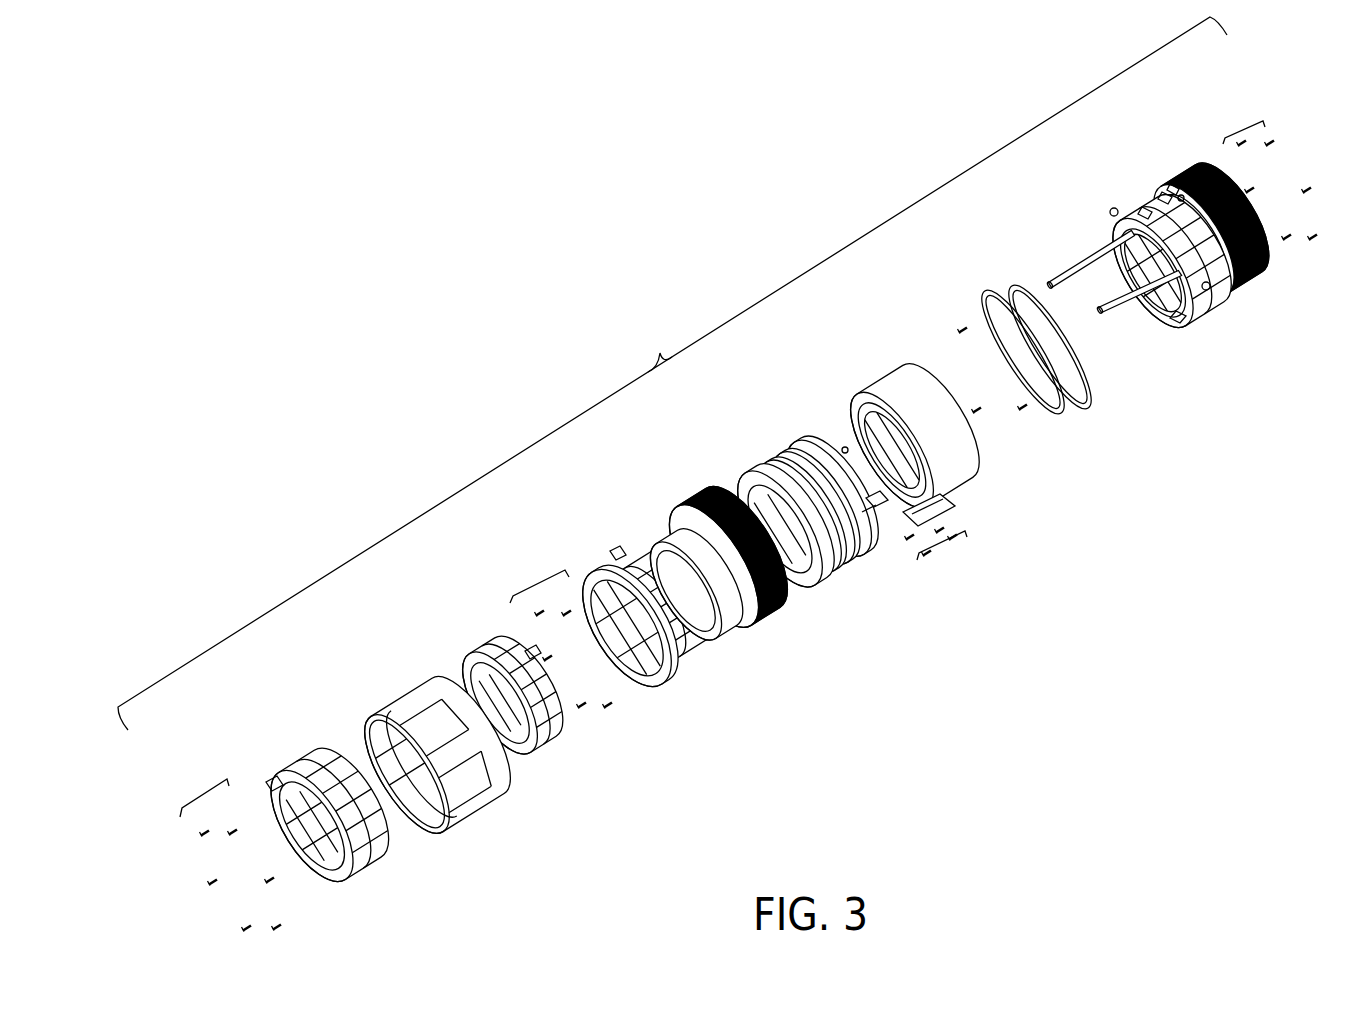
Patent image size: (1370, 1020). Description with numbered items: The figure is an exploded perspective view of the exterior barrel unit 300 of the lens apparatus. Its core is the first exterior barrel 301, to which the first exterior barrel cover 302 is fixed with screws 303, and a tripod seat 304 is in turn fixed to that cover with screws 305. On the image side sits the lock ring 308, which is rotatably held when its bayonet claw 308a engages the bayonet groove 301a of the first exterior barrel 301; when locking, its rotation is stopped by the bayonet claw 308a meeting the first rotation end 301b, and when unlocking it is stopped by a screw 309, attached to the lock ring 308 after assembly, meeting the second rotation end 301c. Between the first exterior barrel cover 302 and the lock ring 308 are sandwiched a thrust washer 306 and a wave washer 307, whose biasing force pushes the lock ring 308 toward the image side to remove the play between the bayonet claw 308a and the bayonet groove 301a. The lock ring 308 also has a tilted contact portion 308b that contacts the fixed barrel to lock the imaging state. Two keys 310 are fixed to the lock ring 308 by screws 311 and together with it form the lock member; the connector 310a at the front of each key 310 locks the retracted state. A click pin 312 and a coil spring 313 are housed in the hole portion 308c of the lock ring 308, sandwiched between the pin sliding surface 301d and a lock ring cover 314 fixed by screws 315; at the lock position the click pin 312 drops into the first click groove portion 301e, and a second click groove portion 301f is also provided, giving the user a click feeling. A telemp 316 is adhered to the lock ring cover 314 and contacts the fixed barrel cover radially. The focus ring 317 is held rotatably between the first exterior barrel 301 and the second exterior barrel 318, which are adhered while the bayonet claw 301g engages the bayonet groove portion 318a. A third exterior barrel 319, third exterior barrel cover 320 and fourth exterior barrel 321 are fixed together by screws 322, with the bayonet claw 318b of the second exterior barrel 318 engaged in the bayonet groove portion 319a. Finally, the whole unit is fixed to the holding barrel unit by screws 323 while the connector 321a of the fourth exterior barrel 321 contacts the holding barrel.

The exterior barrel unit 300 is at (672, 373).
The first exterior barrel 301 is at (827, 459).
The bayonet groove 301a is at (876, 500).
The first rotation end 301b is at (855, 455).
The second rotation end 301c is at (870, 512).
The pin sliding surface 301d is at (827, 433).
The first click groove portion 301e is at (817, 433).
The second click groove portion 301f is at (845, 448).
The bayonet claw 301g is at (748, 467).
The first exterior barrel cover 302 is at (897, 380).
The screws 303 is at (960, 325).
The tripod seat 304 is at (950, 501).
The screws 305 is at (947, 567).
The thrust washer 306 is at (985, 313).
The wave washer 307 is at (1010, 297).
The lock ring 308 is at (1163, 247).
The bayonet claw 308a is at (1178, 320).
The contact portion 308b is at (1143, 216).
The hole portion 308c is at (1163, 200).
The screw 309 is at (1160, 203).
The key 310 is at (1092, 294).
The connector 310a is at (1048, 279).
The screws 311 is at (1112, 210).
The click pin 312 is at (1172, 193).
The coil spring 313 is at (1181, 195).
The lock ring cover 314 is at (1197, 170).
The screws 315 is at (1245, 128).
The telemp 316 is at (1240, 303).
The focus ring 317 is at (710, 493).
The second exterior barrel 318 is at (654, 579).
The bayonet groove portion 318a is at (695, 528).
The bayonet claw 318b is at (589, 532).
The third exterior barrel 319 is at (508, 665).
The bayonet groove portion 319a is at (530, 653).
The third exterior barrel cover 320 is at (413, 685).
The fourth exterior barrel 321 is at (317, 780).
The connector 321a is at (270, 777).
The screws 322 is at (540, 585).
The screws 323 is at (210, 794).